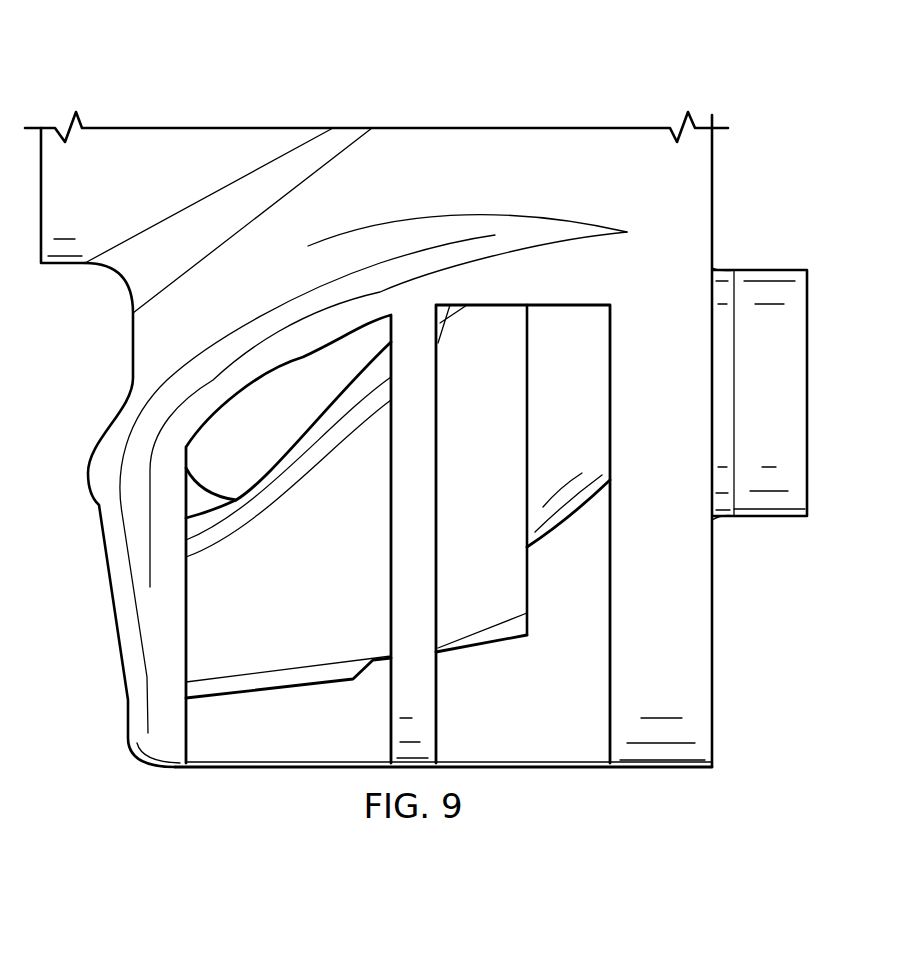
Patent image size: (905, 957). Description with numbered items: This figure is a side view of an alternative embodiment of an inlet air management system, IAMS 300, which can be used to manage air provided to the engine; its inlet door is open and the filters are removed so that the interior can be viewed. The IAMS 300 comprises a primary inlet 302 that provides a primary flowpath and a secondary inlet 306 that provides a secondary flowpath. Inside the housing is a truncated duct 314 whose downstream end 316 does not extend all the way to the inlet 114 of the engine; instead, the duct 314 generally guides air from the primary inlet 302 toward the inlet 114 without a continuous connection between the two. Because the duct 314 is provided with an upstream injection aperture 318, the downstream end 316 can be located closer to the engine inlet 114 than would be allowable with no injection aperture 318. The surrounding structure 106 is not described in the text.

The surgical instrument housing 106 is at (179, 80).
The inlet 114 is at (770, 270).
The IAMS 300 is at (106, 678).
The primary inlet 302 is at (112, 590).
The secondary inlet 306 is at (187, 743).
The truncated duct 314 is at (502, 392).
The downstream end 316 is at (527, 430).
The upstream injection aperture 318 is at (277, 692).